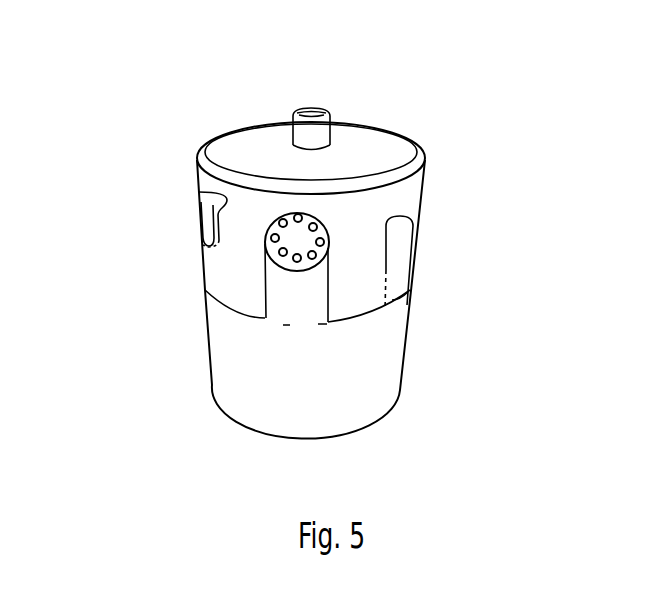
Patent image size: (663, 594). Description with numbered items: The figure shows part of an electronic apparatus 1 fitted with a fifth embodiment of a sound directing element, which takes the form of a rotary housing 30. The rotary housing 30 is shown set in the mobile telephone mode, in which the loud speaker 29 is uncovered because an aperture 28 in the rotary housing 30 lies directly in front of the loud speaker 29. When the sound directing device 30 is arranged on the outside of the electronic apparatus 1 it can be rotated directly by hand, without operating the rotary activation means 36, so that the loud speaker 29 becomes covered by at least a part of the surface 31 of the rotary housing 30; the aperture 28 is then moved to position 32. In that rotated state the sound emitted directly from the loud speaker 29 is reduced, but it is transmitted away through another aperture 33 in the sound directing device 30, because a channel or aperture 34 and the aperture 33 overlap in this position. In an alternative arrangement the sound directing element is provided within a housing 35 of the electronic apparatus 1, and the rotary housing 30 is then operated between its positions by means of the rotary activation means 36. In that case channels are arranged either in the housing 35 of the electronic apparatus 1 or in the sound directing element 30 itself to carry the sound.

The electronic apparatus 1 is at (475, 98).
The aperture 28 is at (297, 315).
The loud speaker 29 is at (292, 243).
The rotary housing 30 is at (423, 218).
The surface 31 is at (228, 281).
The position 32 is at (400, 289).
The aperture 33 is at (200, 232).
The channel or aperture 34 is at (205, 198).
The housing 35 is at (380, 355).
The rotary activation means 36 is at (313, 108).